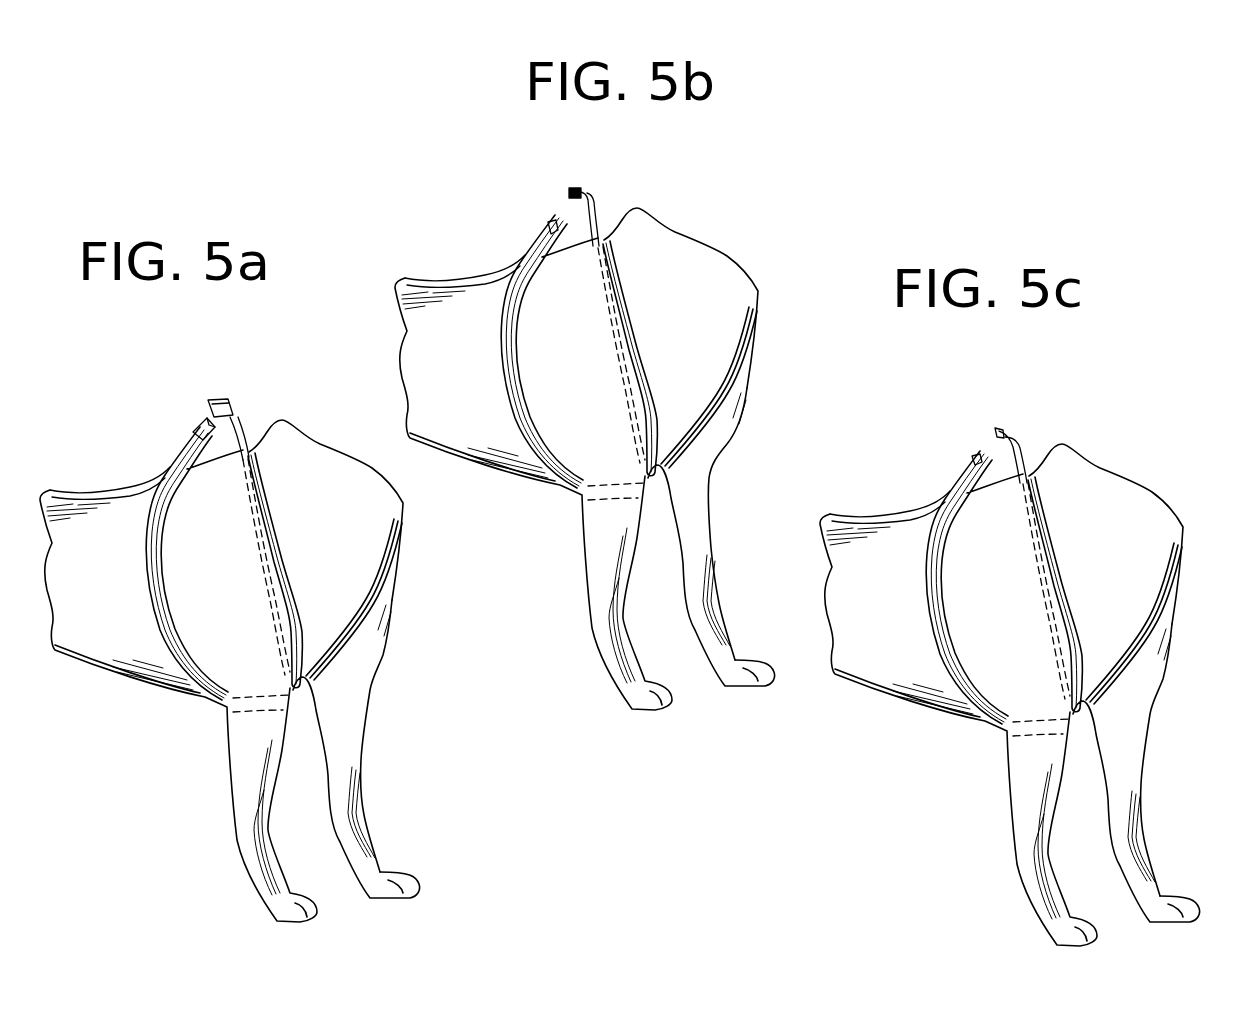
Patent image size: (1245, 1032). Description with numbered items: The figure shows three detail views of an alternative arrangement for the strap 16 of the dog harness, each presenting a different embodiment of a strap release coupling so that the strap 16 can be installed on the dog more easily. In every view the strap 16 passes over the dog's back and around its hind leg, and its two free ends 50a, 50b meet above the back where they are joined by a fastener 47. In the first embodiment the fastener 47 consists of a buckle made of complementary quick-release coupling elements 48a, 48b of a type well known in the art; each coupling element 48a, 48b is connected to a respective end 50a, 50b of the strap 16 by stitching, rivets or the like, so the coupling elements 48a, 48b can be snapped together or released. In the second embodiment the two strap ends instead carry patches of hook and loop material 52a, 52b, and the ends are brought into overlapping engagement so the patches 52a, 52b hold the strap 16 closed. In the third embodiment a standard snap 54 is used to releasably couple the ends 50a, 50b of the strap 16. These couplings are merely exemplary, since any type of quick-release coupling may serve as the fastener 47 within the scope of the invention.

In FIG. 5A, the strap 16 is at (381, 594).
In FIG. 5B, the strap 16 is at (640, 333).
In FIG. 5C, the strap 16 is at (1155, 613).
In FIG. 5A, the fastener 47 is at (192, 400).
In FIG. 5B, the fastener 47 is at (553, 204).
In FIG. 5A, the quick-release coupling element 48a is at (201, 418).
In FIG. 5A, the quick-release coupling element 48b is at (213, 398).
In FIG. 5A, the strap end 50a is at (193, 427).
In FIG. 5B, the strap end 50a is at (545, 227).
In FIG. 5C, the strap end 50a is at (970, 465).
In FIG. 5A, the strap end 50b is at (229, 401).
In FIG. 5B, the strap end 50b is at (596, 194).
In FIG. 5C, the strap end 50b is at (1000, 430).
In FIG. 5B, the patch of hook and loop material 52a is at (553, 224).
In FIG. 5B, the patch of hook and loop material 52b is at (578, 191).
In FIG. 5C, the snap 54 is at (993, 428).